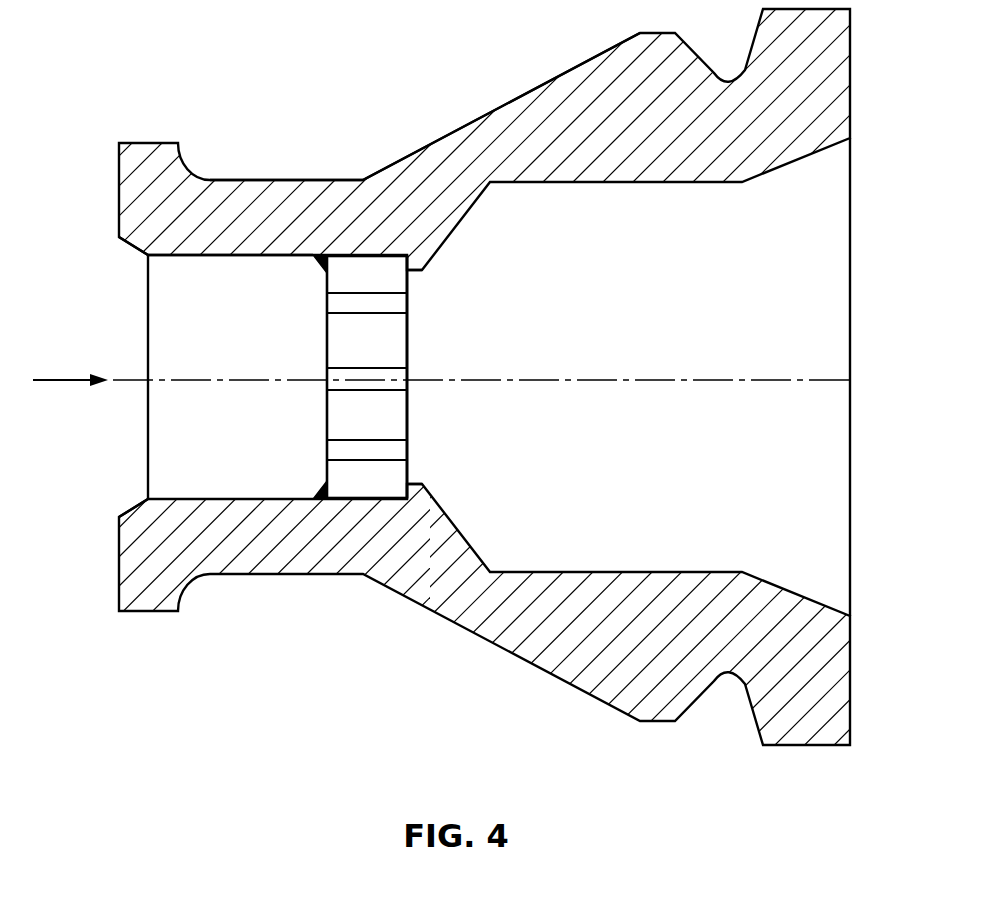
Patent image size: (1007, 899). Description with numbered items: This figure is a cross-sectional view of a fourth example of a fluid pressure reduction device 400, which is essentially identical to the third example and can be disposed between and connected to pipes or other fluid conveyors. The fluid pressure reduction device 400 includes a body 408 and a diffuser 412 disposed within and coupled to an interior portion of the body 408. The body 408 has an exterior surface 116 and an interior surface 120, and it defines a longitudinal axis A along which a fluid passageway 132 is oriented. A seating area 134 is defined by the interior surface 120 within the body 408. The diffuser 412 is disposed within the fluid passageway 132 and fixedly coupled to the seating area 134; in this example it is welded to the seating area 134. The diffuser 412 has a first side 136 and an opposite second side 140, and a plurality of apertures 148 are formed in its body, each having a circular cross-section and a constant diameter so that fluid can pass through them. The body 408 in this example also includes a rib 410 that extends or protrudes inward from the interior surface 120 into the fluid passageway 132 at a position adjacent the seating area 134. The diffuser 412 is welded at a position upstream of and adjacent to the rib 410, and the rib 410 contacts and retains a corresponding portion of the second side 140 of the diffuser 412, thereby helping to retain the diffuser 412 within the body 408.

The fluid pressure reduction device 400 is at (272, 128).
The exterior surface 116 is at (332, 178).
The body 408 is at (458, 80).
The interior surface 120 is at (232, 258).
The fluid passageway 132 is at (238, 325).
The first side 136 is at (305, 417).
The seating area 134 is at (385, 255).
The apertures 148 is at (352, 460).
The second side 140 is at (432, 325).
The diffuser 412 is at (434, 397).
The rib 410 is at (418, 485).
The longitudinal axis A is at (704, 402).